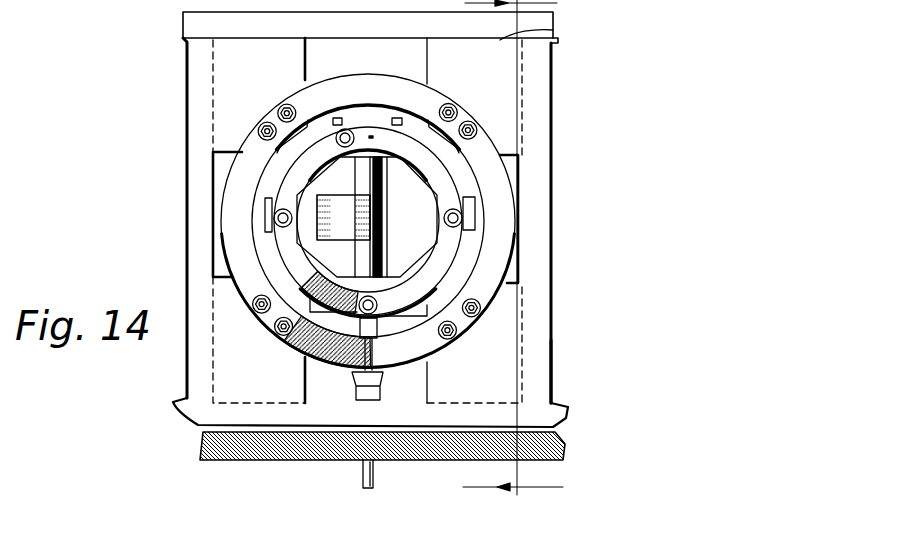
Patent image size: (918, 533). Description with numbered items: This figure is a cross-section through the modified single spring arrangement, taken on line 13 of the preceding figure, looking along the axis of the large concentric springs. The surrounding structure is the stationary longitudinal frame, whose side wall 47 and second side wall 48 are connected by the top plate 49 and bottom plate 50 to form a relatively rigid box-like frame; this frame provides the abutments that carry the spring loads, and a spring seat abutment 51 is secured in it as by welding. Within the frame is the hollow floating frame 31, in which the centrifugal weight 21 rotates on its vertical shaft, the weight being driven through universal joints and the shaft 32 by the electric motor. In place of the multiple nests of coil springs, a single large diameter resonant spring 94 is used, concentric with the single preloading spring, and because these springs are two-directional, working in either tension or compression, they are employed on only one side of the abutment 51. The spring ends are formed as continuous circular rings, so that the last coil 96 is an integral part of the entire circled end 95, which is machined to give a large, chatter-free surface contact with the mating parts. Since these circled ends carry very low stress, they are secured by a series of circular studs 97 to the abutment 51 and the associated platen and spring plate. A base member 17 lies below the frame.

The line of section 13 is at (513, 256).
The base plate 17 is at (207, 446).
The centrifugal weight 21 is at (330, 213).
The floating frame 31 is at (420, 165).
The shaft 32 is at (363, 474).
The side wall 47 is at (552, 381).
The second side wall 48 is at (552, 205).
The top plate 49 is at (187, 200).
The bottom plate 50 is at (478, 391).
The abutment 51 is at (430, 49).
The resonant spring 94 is at (304, 186).
The continuous circled end 95 is at (470, 123).
The last coil 96 is at (430, 88).
The circular studs 97 is at (266, 126).